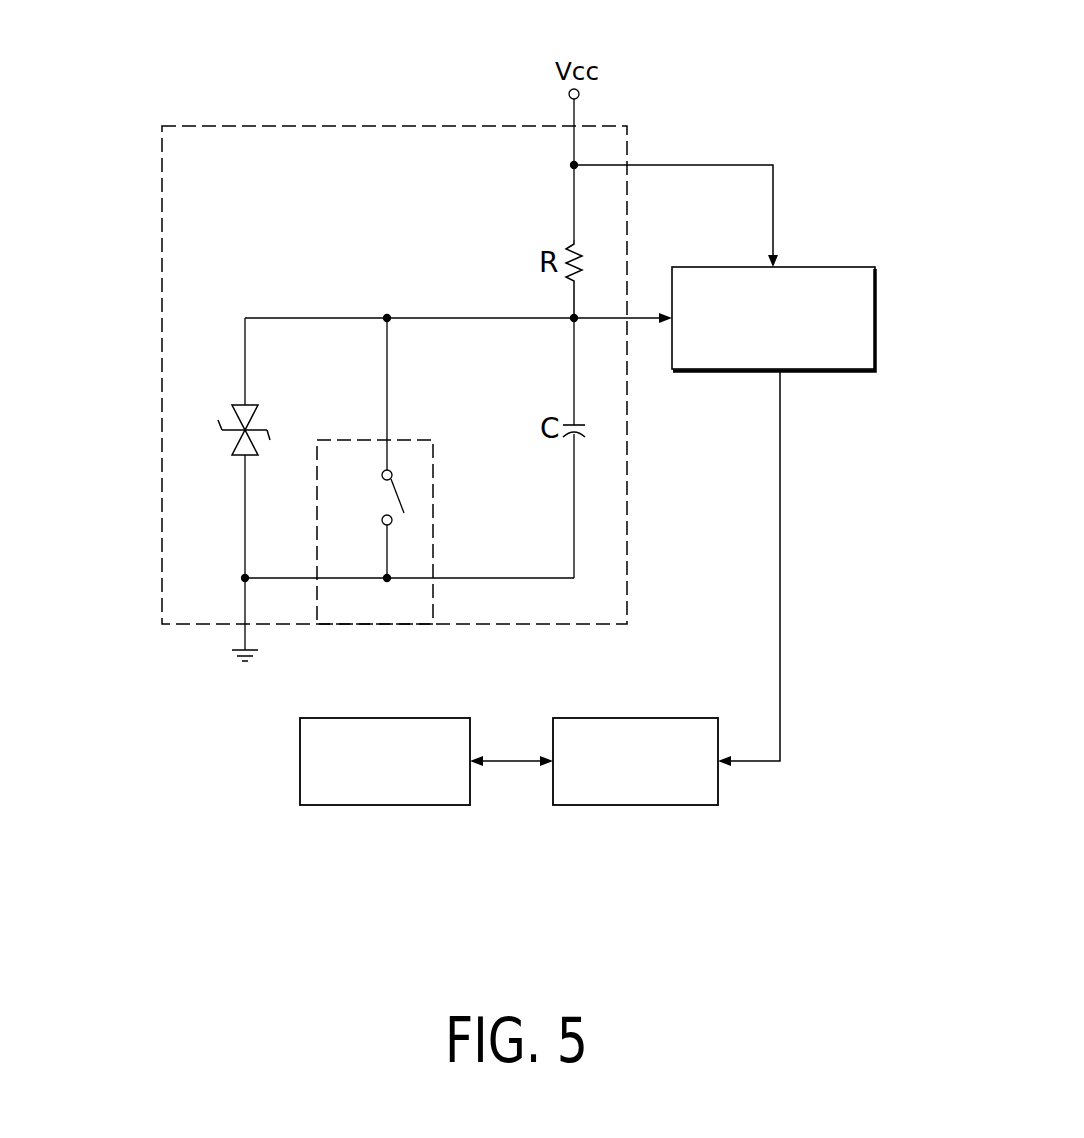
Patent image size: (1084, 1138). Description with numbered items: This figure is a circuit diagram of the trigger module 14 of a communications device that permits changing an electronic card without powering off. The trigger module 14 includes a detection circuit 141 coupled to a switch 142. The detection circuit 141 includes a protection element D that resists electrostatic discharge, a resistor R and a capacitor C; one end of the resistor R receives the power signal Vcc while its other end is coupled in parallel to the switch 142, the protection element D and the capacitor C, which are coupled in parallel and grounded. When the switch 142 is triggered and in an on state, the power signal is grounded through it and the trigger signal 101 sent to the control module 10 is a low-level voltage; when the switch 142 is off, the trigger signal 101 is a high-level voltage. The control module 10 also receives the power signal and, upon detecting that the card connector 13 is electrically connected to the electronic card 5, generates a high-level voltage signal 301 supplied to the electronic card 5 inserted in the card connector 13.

The trigger module 14 is at (224, 100).
The detection circuit 141 is at (185, 292).
The switch 142 is at (358, 534).
The trigger signal 101 is at (597, 320).
The control module 10 is at (850, 270).
The high-level voltage signal 301 is at (780, 567).
The electronic card 5 is at (387, 806).
The card connector 13 is at (635, 806).